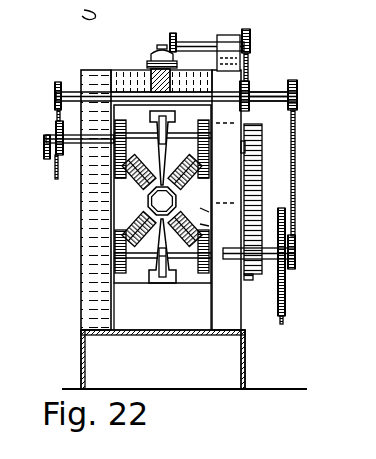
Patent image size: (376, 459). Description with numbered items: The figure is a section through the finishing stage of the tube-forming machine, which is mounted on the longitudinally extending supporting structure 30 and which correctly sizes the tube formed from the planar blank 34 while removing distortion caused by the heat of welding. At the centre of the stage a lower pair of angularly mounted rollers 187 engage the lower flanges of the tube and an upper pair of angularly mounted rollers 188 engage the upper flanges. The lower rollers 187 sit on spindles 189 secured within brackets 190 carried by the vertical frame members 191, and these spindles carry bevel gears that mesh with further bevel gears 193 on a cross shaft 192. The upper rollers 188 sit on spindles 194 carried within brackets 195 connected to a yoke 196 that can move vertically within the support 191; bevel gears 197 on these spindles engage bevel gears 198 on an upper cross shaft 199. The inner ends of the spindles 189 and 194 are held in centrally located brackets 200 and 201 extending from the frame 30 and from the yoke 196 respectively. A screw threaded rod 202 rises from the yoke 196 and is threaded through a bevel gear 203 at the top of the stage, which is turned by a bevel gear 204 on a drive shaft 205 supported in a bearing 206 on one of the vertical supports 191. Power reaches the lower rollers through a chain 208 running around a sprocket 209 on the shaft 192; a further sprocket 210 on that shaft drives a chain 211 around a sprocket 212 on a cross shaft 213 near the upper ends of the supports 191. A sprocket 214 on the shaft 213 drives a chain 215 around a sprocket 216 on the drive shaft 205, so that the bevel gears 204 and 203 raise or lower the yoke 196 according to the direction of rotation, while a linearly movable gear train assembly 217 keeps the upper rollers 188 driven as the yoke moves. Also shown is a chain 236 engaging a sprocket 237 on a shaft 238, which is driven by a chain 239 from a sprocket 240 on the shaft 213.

The supporting structure 30 is at (79, 376).
The planar blank 34 is at (162, 201).
The lower rollers 187 is at (113, 242).
The upper rollers 188 is at (107, 181).
The spindles 189 is at (197, 222).
The brackets 190 is at (196, 206).
The vertical frame members 191 is at (222, 312).
The cross shaft 192 is at (200, 239).
The bevel gears 193 is at (189, 256).
The spindles 194 is at (201, 162).
The brackets 195 is at (197, 170).
The yoke 196 is at (178, 111).
The bevel gears 197 is at (110, 179).
The bevel gears 198 is at (121, 111).
The upper cross shaft 199 is at (127, 141).
The bracket 200 is at (160, 255).
The bracket 201 is at (173, 141).
The screw threaded rod 202 is at (146, 84).
The bevel gear 203 is at (139, 49).
The bevel gear 204 is at (157, 41).
The drive shaft 205 is at (190, 33).
The bearing 206 is at (219, 30).
The chain 208 is at (269, 312).
The sprocket 209 is at (272, 274).
The sprocket 210 is at (283, 237).
The chain 211 is at (279, 224).
The sprocket 212 is at (280, 96).
The cross shaft 213 is at (256, 82).
The sprocket 214 is at (236, 80).
The chain 215 is at (238, 57).
The sprocket 216 is at (238, 31).
The gear train assembly 217 is at (254, 125).
The chain 236 is at (47, 158).
The sprocket 237 is at (44, 138).
The shaft 238 is at (40, 133).
The chain 239 is at (49, 106).
The sprocket 240 is at (46, 78).